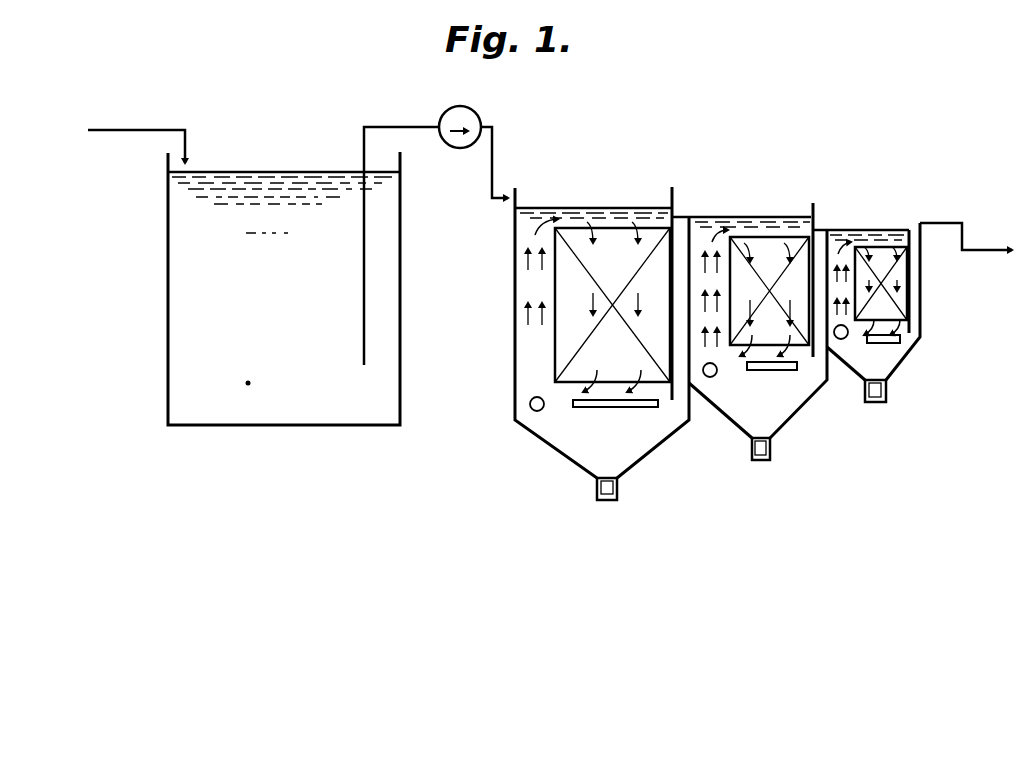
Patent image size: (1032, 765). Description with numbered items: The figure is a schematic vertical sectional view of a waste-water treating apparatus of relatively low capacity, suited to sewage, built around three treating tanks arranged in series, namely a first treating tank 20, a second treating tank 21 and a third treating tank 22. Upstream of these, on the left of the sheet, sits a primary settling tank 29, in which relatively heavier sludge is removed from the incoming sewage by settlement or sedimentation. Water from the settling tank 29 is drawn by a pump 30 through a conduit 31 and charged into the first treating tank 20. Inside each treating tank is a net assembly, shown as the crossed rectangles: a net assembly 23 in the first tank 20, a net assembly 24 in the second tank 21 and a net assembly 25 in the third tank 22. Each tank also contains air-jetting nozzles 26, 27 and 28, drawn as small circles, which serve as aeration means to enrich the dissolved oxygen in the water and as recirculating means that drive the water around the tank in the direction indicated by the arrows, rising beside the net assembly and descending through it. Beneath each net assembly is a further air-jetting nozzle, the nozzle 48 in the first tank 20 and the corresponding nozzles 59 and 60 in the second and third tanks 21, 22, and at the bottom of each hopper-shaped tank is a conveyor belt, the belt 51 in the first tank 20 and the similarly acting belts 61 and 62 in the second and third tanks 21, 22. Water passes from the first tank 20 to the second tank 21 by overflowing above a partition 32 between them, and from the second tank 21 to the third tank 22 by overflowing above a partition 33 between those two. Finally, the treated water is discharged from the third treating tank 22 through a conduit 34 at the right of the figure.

The first treating tank 20 is at (515, 332).
The second treating tank 21 is at (818, 388).
The third treating tank 22 is at (923, 321).
The net assembly 23 is at (570, 287).
The net assembly 24 is at (773, 255).
The net assembly 25 is at (885, 262).
The air-jetting nozzle 26 is at (535, 412).
The air-jetting nozzle 27 is at (710, 378).
The air-jetting nozzle 28 is at (841, 340).
The primary settling tank 29 is at (168, 303).
The pump 30 is at (478, 114).
The conduit 31 is at (418, 127).
The partition 32 is at (692, 252).
The partition 33 is at (830, 258).
The conduit 34 is at (985, 250).
The air-jetting nozzle 48 is at (622, 409).
The conveyor belt 51 is at (599, 484).
The air-jetting nozzle 59 is at (775, 371).
The air-jetting nozzle 60 is at (885, 343).
The conveyor belt 61 is at (753, 452).
The conveyor belt 62 is at (885, 395).